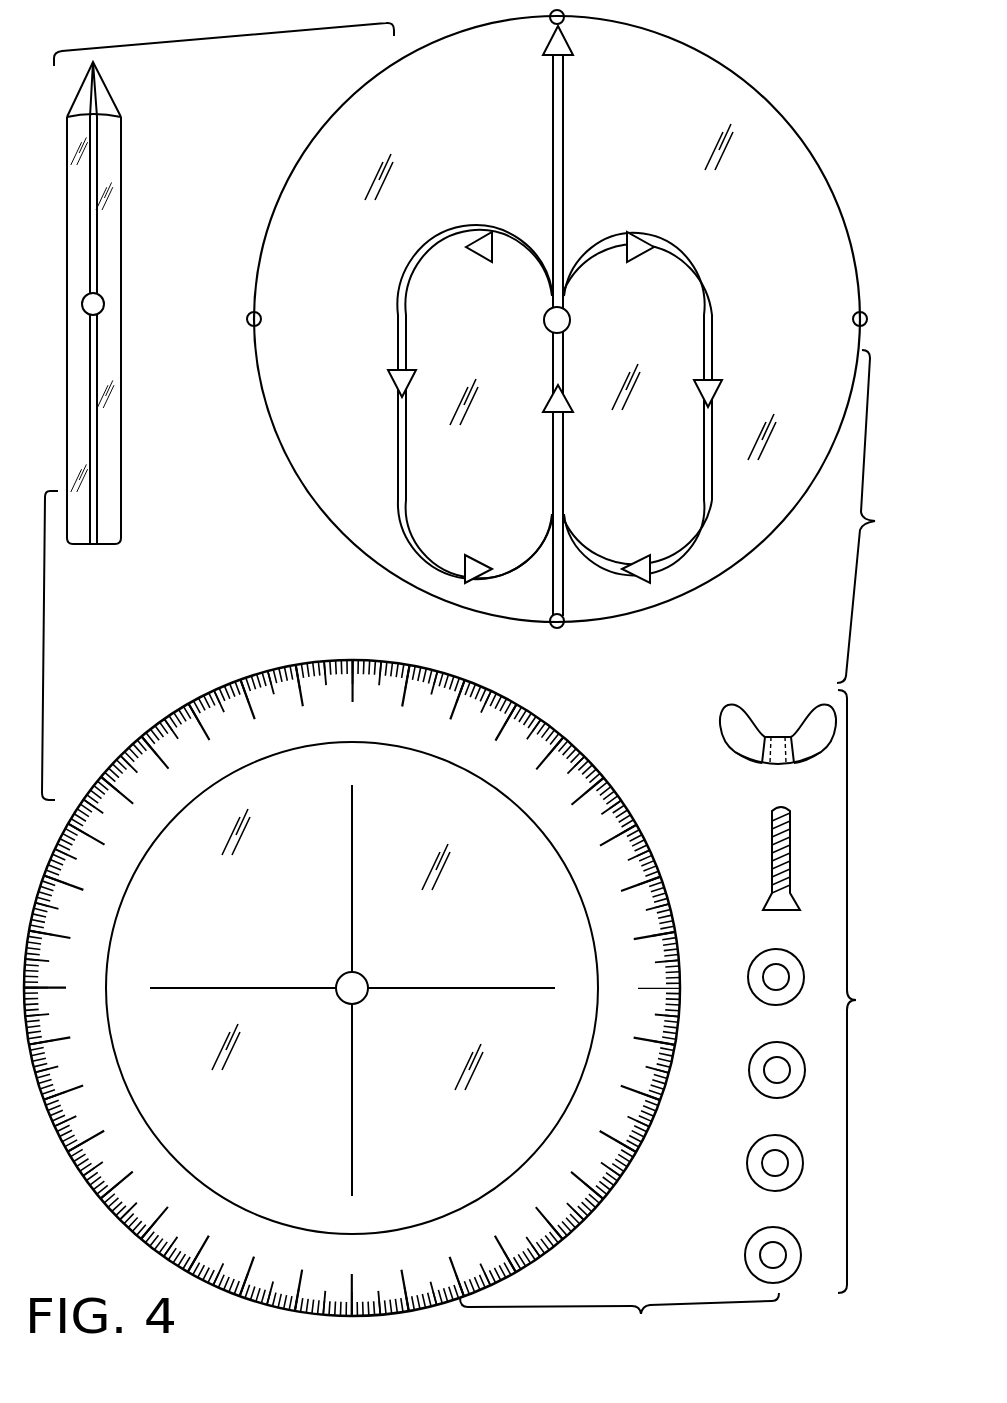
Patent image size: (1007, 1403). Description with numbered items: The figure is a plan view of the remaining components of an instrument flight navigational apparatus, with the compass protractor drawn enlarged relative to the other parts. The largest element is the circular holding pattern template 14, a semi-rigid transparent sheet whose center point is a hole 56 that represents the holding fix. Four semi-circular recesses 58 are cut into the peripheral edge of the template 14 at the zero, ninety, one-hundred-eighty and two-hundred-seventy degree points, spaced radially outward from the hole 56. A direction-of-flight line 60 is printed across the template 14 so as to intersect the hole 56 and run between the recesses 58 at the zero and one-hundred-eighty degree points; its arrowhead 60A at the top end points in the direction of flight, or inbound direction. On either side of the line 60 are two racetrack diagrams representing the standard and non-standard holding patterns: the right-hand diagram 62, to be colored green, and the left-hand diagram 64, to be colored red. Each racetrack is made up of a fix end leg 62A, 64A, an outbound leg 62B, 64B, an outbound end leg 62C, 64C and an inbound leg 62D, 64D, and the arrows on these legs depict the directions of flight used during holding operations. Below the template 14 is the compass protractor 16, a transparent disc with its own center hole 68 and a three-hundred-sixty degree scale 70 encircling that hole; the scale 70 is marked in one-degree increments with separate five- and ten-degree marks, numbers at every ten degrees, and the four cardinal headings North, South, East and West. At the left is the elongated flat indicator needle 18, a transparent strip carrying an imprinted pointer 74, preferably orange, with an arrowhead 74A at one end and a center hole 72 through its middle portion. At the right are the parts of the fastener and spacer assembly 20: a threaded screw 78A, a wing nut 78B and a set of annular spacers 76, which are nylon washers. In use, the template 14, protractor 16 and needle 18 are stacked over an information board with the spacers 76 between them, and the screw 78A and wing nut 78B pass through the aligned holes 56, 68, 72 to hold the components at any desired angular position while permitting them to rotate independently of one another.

The holding pattern template 14 is at (770, 76).
The compass protractor 16 is at (602, 750).
The indicator needle 18 is at (133, 150).
The fastener and spacer assembly 20 is at (860, 992).
The center hole 56 is at (568, 318).
The semi-circular recesses 58 is at (549, 22).
The direction-of-flight line 60 is at (565, 148).
The arrowhead 60A is at (574, 46).
The right-hand racetrack diagram 62 is at (722, 307).
The fix end leg 62A is at (612, 240).
The outbound leg 62B is at (714, 357).
The outbound end leg 62C is at (670, 568).
The inbound leg 62D is at (565, 452).
The left-hand racetrack diagram 64 is at (388, 303).
The fix end leg 64A is at (490, 240).
The outbound leg 64B is at (398, 432).
The outbound end leg 64C is at (433, 568).
The inbound leg 64D is at (552, 437).
The center hole 68 is at (366, 976).
The 360° scale 70 is at (478, 776).
The center hole 72 is at (103, 302).
The pointer 74 is at (98, 200).
The arrowhead 74A is at (101, 100).
The annular spacers 76 is at (752, 1062).
The threaded screw 78A is at (772, 840).
The wing nut 78B is at (808, 718).